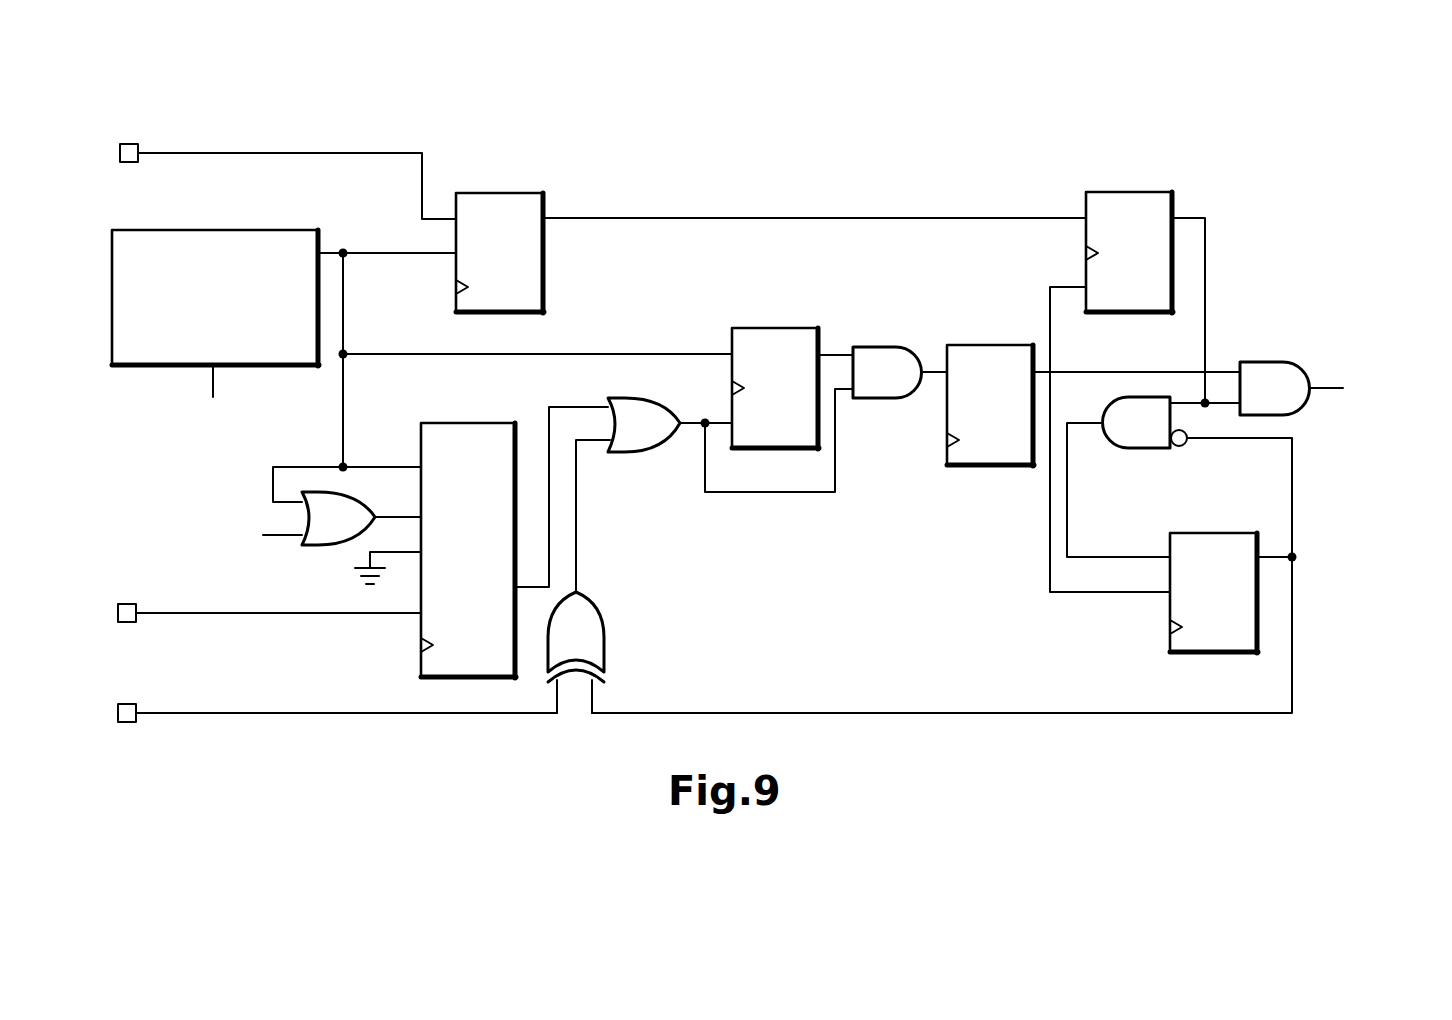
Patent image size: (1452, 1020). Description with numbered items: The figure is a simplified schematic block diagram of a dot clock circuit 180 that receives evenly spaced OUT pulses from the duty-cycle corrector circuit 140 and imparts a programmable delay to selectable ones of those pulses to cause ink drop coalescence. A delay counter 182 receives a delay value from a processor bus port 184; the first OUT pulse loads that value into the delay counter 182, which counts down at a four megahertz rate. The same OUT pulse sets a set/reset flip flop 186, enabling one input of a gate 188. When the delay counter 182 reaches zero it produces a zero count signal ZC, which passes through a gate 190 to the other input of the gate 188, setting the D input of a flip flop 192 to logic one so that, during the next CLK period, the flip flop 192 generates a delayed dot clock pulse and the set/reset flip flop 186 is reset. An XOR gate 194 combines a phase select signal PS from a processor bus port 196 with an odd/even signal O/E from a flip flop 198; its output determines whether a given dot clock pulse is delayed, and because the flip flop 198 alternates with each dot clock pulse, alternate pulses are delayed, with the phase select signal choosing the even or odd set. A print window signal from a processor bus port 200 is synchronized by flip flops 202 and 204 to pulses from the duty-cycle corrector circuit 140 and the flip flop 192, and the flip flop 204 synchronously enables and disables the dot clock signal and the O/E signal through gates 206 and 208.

The duty-cycle corrector circuit 140 is at (185, 230).
The dot clock circuit 180 is at (313, 779).
The delay counter 182 is at (448, 677).
The processor bus port 184 is at (128, 604).
The set/reset flip flop 186 is at (770, 328).
The gate 188 is at (888, 347).
The gate 190 is at (635, 452).
The flip flop 192 is at (990, 465).
The XOR gate 194 is at (604, 636).
The processor bus port 196 is at (128, 723).
The flip flop 198 is at (1213, 652).
The processor bus port 200 is at (129, 144).
The flip flop 202 is at (496, 193).
The flip flop 204 is at (1122, 192).
The gate 206 is at (1280, 362).
The gate 208 is at (1133, 450).